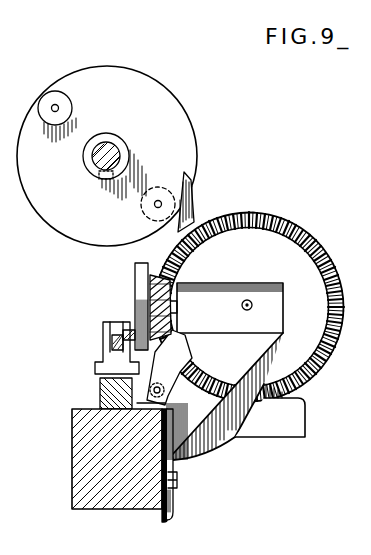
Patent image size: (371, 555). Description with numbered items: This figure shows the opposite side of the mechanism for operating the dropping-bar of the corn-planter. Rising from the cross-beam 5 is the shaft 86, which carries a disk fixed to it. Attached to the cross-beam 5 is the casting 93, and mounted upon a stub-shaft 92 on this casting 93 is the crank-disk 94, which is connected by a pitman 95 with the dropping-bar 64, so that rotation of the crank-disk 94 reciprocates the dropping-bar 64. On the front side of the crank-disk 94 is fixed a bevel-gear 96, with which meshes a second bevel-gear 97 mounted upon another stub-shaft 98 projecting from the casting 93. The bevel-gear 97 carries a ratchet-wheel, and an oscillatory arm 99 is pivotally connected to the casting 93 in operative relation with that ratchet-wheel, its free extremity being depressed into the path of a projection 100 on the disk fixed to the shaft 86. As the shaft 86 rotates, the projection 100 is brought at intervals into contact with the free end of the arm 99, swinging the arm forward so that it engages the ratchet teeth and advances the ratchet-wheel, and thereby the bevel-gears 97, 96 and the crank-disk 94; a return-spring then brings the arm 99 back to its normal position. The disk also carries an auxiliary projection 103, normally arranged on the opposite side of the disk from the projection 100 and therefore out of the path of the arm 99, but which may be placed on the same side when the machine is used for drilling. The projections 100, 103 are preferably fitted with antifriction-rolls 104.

The beam 5 is at (72, 436).
The dropping-bar 64 is at (104, 386).
The shaft 86 is at (110, 150).
The stub-shaft 92 is at (176, 308).
The casting 93 is at (238, 376).
The crank-disk 94 is at (136, 274).
The pitman 95 is at (112, 338).
The bevel-gear 96 is at (163, 274).
The bevel-gear 97 is at (249, 307).
The stub-shaft 98 is at (251, 309).
The oscillatory arm 99 is at (189, 208).
The projection 100 is at (155, 206).
The auxiliary projection 103 is at (47, 106).
The antifriction-rolls 104 is at (62, 98).